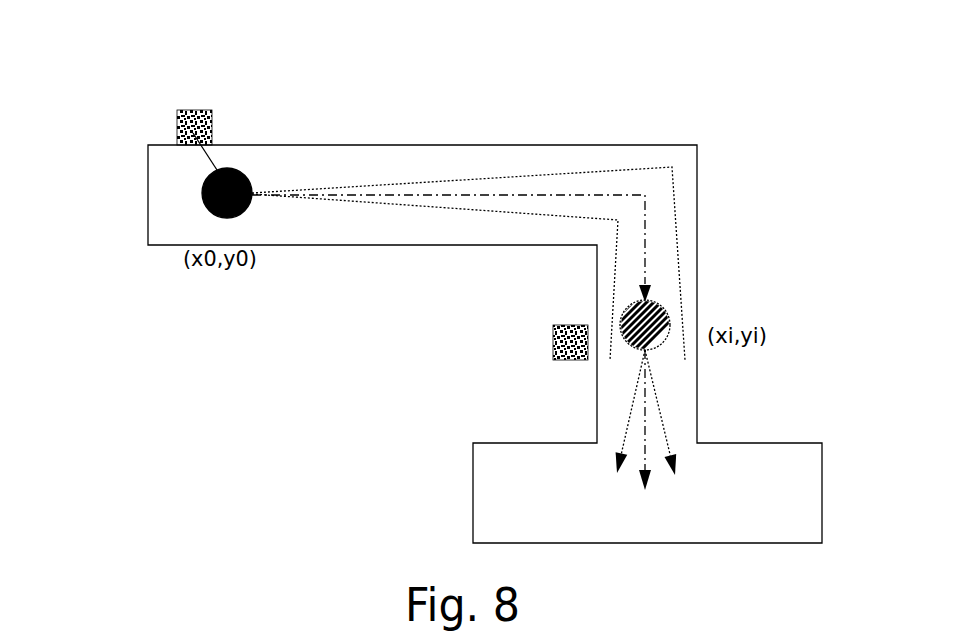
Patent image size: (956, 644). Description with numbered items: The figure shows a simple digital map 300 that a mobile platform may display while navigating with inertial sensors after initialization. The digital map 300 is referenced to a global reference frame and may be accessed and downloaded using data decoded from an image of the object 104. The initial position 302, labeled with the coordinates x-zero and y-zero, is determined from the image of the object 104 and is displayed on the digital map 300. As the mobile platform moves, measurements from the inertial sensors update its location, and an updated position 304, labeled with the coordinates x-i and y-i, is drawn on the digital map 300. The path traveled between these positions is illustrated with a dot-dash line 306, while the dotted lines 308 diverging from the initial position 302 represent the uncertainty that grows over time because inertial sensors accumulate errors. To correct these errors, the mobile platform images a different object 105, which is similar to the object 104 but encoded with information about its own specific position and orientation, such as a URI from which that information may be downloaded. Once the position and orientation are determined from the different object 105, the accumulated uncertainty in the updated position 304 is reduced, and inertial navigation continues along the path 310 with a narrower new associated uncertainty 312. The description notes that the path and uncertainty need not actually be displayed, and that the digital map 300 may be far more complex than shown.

The digital map 300 is at (190, 40).
The initial position 302 is at (203, 202).
The updated position 304 is at (667, 312).
The dot-dash line 306 is at (525, 195).
The dotted lines 308 is at (410, 185).
The path 310 is at (646, 433).
The new associated uncertainty 312 is at (668, 445).
The object 104 is at (177, 128).
The different object 105 is at (622, 332).